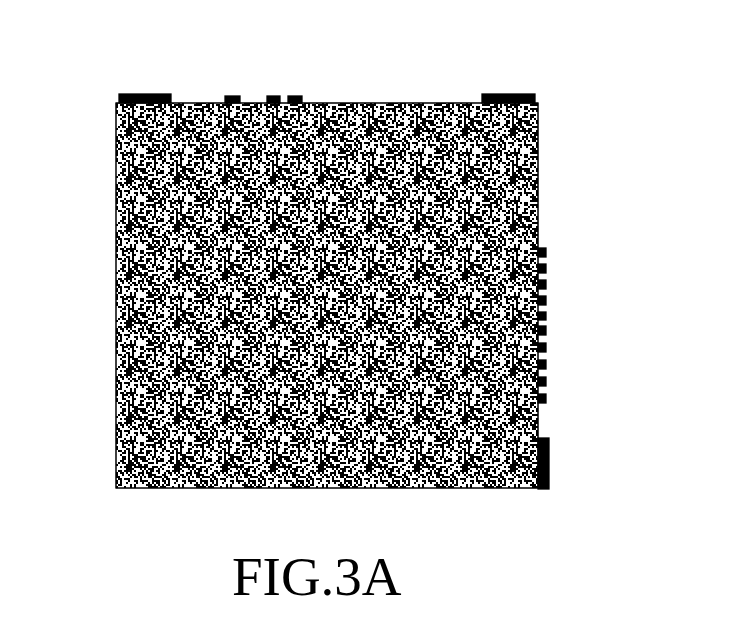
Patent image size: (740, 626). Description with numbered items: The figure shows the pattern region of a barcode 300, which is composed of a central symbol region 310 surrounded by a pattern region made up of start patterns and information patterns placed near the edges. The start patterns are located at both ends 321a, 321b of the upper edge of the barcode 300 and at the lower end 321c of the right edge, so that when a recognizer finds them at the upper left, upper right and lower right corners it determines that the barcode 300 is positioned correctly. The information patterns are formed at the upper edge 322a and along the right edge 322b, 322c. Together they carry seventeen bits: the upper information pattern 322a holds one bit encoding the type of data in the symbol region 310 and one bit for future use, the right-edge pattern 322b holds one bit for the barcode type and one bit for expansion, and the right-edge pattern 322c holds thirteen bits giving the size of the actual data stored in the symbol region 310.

The barcode 300 is at (108, 163).
The symbol region 310 is at (116, 321).
The start pattern at upper left end 321a is at (142, 93).
The start pattern at upper right end 321b is at (506, 93).
The start pattern at lower right end 321c is at (549, 462).
The information pattern at upper edge 322a is at (301, 91).
The information pattern at right edge 322b is at (552, 248).
The information pattern at right edge 322c is at (552, 323).